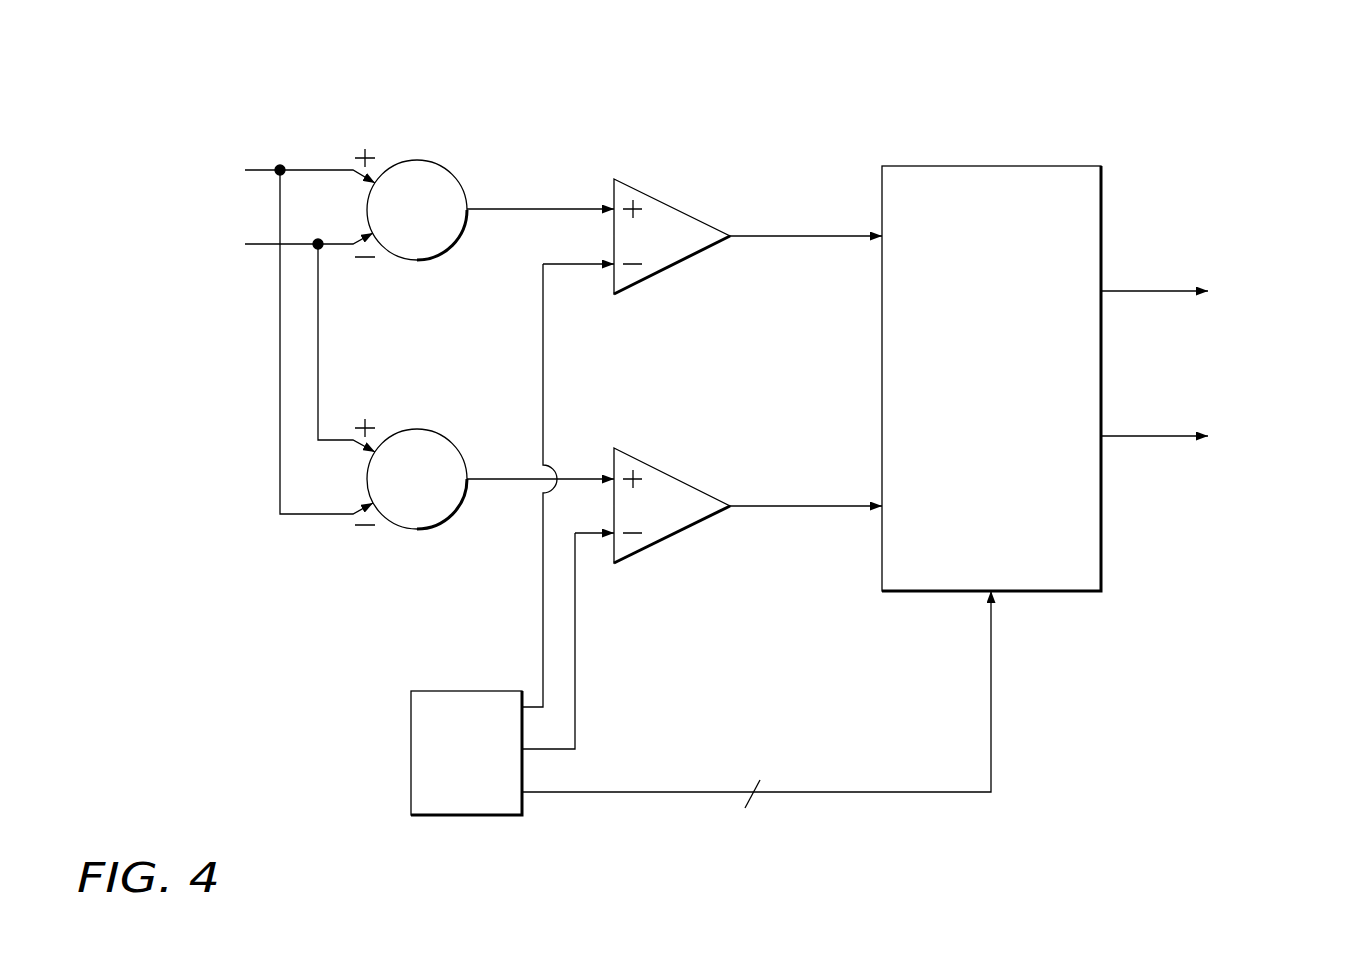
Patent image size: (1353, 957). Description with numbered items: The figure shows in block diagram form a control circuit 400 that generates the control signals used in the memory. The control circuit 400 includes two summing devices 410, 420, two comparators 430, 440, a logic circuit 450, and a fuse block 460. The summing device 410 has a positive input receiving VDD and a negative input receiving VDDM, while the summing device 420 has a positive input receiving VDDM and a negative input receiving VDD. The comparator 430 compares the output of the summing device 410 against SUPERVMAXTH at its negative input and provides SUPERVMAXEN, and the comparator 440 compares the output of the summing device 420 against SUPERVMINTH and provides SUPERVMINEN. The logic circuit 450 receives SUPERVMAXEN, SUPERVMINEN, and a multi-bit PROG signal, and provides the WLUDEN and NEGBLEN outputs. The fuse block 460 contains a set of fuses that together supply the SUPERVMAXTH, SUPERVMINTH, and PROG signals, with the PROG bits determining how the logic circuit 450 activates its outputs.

The control circuit 400 is at (121, 68).
The summing device 410 is at (432, 158).
The summing device 420 is at (432, 428).
The comparator 430 is at (650, 196).
The comparator 440 is at (650, 466).
The logic circuit 450 is at (1045, 166).
The fuse block 460 is at (440, 691).